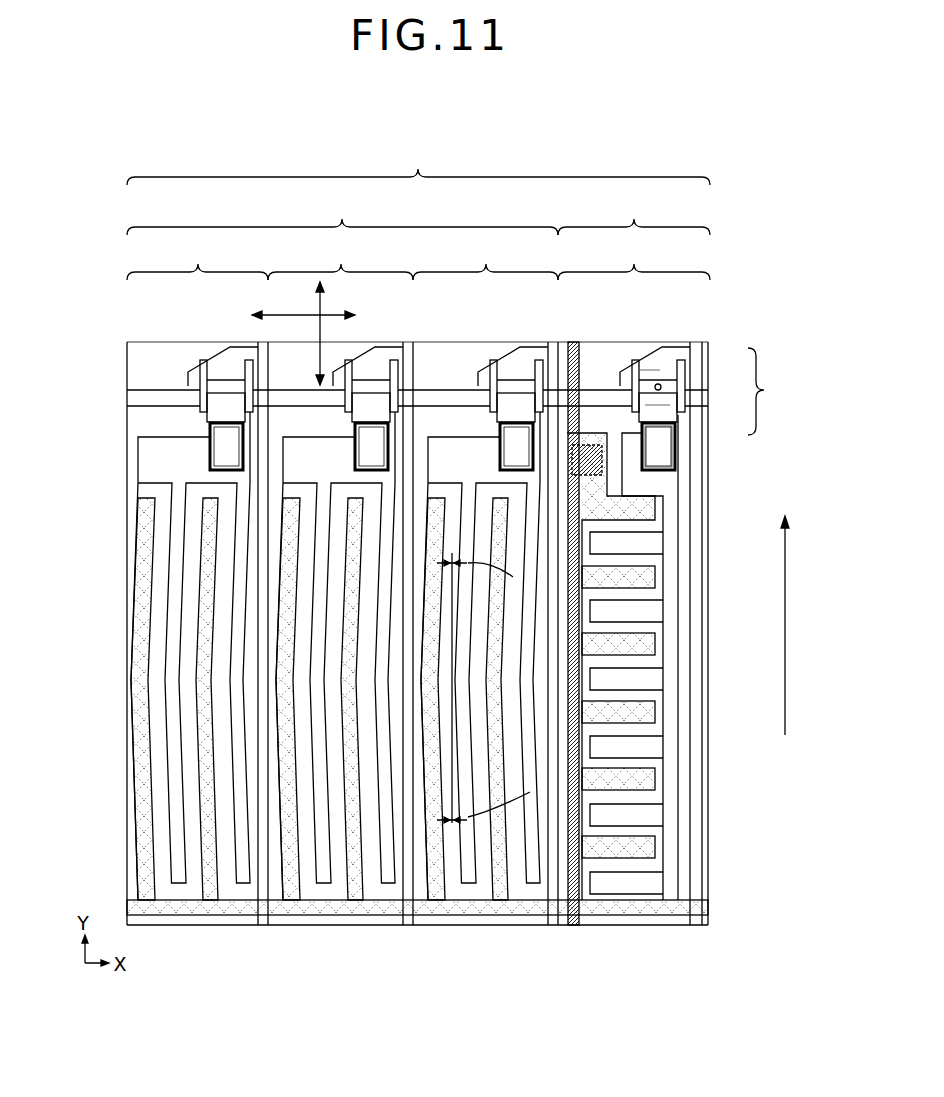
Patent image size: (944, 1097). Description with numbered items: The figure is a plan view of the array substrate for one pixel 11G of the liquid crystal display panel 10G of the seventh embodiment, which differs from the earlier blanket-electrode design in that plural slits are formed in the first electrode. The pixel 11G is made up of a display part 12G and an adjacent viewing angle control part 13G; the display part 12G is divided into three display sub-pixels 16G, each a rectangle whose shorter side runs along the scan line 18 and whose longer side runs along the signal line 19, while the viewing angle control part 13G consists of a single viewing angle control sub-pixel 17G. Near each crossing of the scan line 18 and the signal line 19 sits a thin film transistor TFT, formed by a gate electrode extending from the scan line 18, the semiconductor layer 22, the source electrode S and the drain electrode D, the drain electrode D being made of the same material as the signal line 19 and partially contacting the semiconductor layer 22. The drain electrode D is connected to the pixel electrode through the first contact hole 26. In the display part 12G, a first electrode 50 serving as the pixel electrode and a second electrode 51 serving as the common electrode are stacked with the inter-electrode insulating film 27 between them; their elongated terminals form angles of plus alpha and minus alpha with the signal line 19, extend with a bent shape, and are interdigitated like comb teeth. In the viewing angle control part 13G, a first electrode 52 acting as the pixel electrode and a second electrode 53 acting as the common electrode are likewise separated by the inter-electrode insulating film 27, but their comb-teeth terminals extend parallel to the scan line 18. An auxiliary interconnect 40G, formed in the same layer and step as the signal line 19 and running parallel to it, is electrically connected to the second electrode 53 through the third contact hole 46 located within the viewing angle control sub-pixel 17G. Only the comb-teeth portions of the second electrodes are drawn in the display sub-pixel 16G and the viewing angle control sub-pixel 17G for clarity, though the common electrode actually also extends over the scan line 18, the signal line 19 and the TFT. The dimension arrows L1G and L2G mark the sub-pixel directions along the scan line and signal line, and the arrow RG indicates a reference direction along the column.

The liquid crystal display panel 10G is at (97, 157).
The pixel 11G is at (418, 165).
The display part 12G is at (342, 214).
The viewing angle control part 13G is at (634, 214).
The display sub-pixel 16G is at (342, 259).
The viewing angle control sub-pixel 17G is at (634, 259).
The scan line 18 is at (164, 395).
The signal line 19 is at (690, 495).
The semiconductor layer 22 is at (661, 387).
The first contact hole 26 is at (660, 447).
The inter-electrode insulating film 27 is at (650, 795).
The auxiliary interconnect 40G is at (574, 440).
The third contact hole 46 is at (587, 446).
The first electrode 50 is at (175, 792).
The second electrode 51 is at (140, 730).
The first electrode 52 is at (653, 885).
The second electrode 53 is at (637, 644).
The source electrode S is at (658, 372).
The drain electrode D is at (660, 404).
The thin film transistor TFT is at (777, 391).
The rubbing direction RG is at (771, 625).
The optical axis of first polarizer L1G is at (303, 305).
The optical axis of second polarizer L2G is at (309, 333).